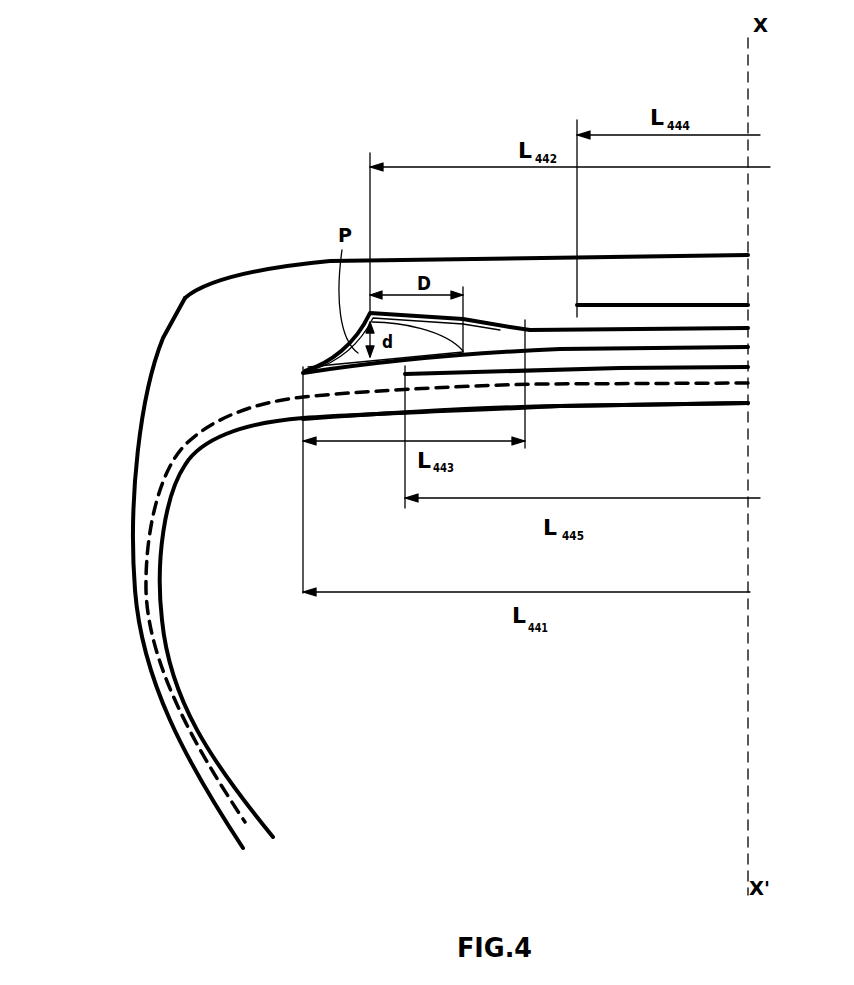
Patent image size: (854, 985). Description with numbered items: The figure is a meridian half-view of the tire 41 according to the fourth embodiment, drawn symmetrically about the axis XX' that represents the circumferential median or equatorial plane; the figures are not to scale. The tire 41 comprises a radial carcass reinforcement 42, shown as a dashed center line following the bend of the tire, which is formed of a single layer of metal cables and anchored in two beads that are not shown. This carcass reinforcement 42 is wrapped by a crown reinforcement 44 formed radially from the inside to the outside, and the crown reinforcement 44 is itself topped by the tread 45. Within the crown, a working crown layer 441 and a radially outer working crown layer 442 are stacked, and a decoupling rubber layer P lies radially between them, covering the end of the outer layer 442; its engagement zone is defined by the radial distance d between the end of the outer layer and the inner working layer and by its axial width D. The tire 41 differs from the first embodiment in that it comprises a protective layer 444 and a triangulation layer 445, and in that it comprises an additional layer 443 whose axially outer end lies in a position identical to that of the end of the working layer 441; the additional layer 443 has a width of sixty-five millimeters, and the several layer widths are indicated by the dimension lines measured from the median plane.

The tire 41 is at (95, 258).
The carcass reinforcement 42 is at (157, 497).
The crown reinforcement 44 is at (778, 335).
The working crown layer 441 is at (722, 349).
The working crown layer 442 is at (697, 328).
The additional layer 443 is at (333, 362).
The protective layer 444 is at (580, 303).
The triangulation layer 445 is at (686, 370).
The tread 45 is at (657, 268).